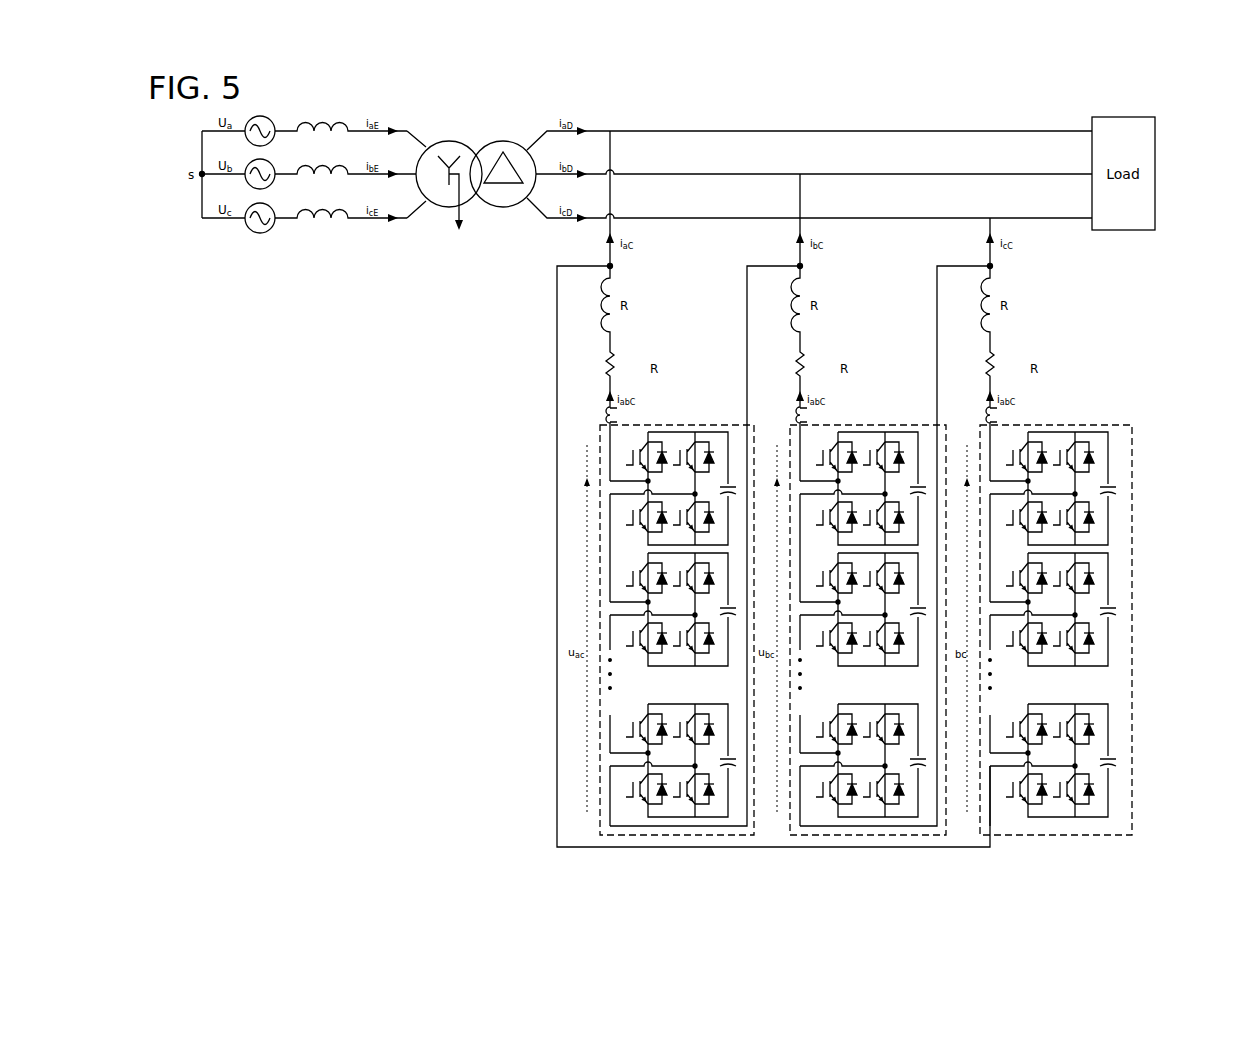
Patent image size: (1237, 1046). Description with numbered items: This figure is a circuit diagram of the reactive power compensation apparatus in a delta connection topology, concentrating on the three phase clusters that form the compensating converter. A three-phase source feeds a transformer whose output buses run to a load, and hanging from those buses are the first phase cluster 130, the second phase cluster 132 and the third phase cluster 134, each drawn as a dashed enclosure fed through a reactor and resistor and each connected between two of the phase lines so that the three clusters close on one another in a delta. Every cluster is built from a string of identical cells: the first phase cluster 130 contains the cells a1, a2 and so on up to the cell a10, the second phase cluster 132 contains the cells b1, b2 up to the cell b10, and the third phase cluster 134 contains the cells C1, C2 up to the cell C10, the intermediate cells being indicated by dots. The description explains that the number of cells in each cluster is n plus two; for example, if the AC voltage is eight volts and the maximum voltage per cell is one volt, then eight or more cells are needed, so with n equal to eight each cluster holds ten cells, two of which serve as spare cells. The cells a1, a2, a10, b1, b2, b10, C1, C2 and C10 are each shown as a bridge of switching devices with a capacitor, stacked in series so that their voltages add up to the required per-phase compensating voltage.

The first phase cluster 130 is at (681, 423).
The second phase cluster 132 is at (878, 423).
The third phase cluster 134 is at (1062, 423).
The first cell of the first phase cluster a1 is at (628, 442).
The second cell of the first phase cluster a2 is at (628, 571).
The tenth cell of the first phase cluster a10 is at (628, 711).
The first cell of the second phase cluster b1 is at (818, 442).
The second cell of the second phase cluster b2 is at (818, 571).
The tenth cell of the second phase cluster b10 is at (818, 711).
The first cell of the third phase cluster C1 is at (1119, 439).
The second cell of the third phase cluster C2 is at (1119, 566).
The tenth cell of the third phase cluster C10 is at (1010, 708).